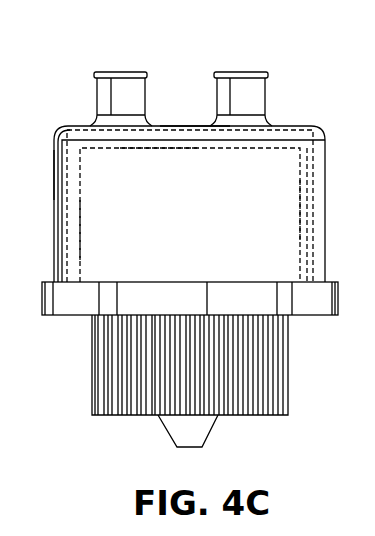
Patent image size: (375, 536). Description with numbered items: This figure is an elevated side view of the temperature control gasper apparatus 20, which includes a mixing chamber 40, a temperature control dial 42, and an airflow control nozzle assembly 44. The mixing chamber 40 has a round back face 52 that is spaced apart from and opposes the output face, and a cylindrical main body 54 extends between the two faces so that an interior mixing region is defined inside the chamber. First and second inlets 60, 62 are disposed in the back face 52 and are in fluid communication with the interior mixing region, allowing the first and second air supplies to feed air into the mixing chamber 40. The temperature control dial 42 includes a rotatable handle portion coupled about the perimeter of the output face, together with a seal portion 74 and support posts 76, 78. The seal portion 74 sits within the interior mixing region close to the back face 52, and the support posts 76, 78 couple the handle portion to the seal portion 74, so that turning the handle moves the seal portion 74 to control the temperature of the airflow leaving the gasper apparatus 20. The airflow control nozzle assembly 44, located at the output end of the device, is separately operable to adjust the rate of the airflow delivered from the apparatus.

The temperature control gasper apparatus 20 is at (198, 235).
The mixing chamber 40 is at (326, 136).
The temperature control dial 42 is at (337, 313).
The airflow control nozzle assembly 44 is at (287, 416).
The back face 52 is at (195, 125).
The cylindrical main body 54 is at (57, 177).
The first inlet 60 is at (145, 118).
The second inlet 62 is at (265, 117).
The seal portion 74 is at (162, 149).
The support post 76 is at (80, 238).
The support post 78 is at (300, 207).